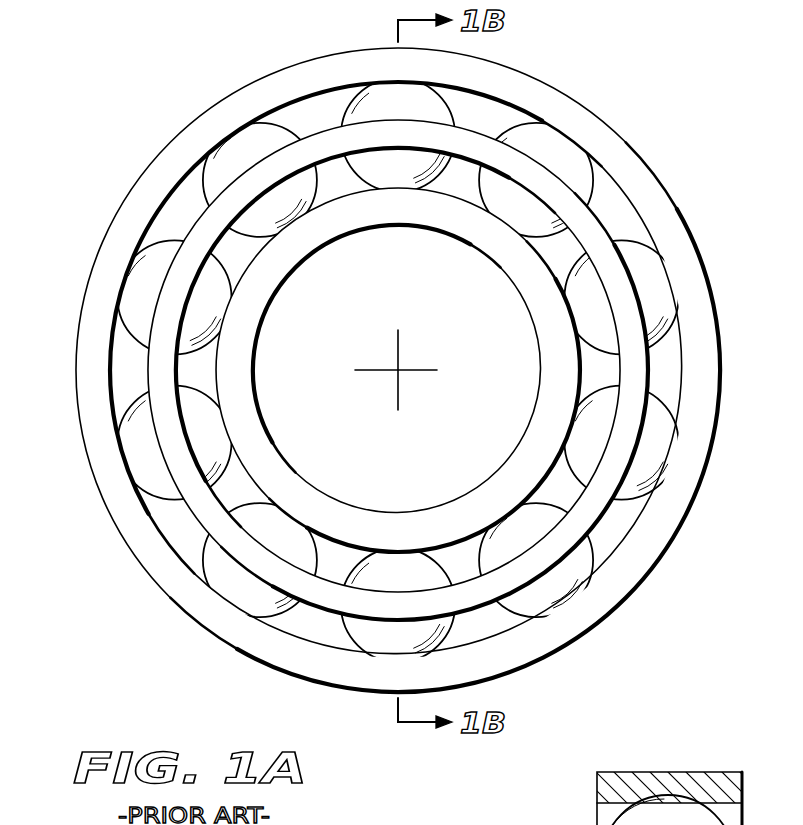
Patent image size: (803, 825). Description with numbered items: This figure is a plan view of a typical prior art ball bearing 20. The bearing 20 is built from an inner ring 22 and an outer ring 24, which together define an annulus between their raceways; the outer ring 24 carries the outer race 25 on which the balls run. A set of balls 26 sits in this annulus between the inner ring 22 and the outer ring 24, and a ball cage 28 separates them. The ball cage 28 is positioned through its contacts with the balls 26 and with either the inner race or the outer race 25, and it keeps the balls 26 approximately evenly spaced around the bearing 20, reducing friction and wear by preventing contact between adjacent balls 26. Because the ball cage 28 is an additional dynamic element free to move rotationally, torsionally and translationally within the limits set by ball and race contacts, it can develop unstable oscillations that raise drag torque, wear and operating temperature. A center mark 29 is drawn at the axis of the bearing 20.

In FIG. 1A, the ball bearing assembly 20 is at (399, 370).
In FIG. 1A, the inner race 22 is at (297, 243).
In FIG. 1A, the outer race 24 is at (200, 136).
In FIG. 1B, the outer race 24 is at (745, 812).
In FIG. 1B, the outer race hatched section 25 is at (700, 795).
In FIG. 1A, the balls 26 is at (132, 284).
In FIG. 1B, the balls 26 is at (618, 824).
In FIG. 1A, the ball cage / retainer ring 28 is at (627, 297).
In FIG. 1A, the center axis 29 is at (399, 372).